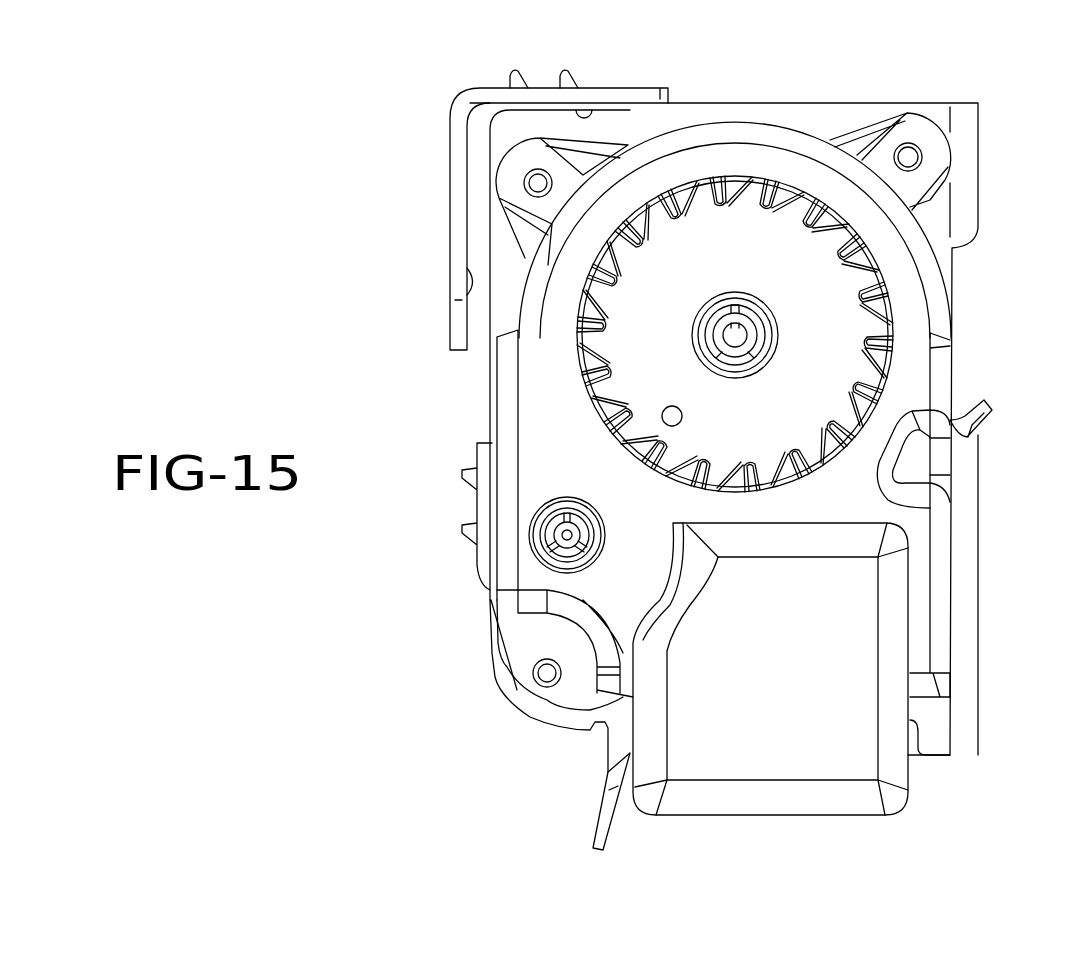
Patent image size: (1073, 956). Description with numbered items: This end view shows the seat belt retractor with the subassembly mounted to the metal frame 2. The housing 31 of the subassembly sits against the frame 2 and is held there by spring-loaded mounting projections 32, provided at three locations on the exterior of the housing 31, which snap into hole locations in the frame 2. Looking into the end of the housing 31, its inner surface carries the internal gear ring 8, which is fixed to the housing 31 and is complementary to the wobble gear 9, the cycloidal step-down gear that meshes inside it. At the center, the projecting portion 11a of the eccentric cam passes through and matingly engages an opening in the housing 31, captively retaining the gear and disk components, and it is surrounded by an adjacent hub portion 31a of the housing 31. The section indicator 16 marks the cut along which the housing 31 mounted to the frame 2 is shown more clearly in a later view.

The frame 2 is at (962, 130).
The internal gear ring 8 is at (863, 243).
The wobble gear 9 is at (825, 335).
The projecting portion 11a is at (724, 344).
The section line 16 is at (735, 870).
The housing 31 is at (771, 132).
The bearing portion 31a is at (704, 318).
The mounting projections 32 is at (524, 176).